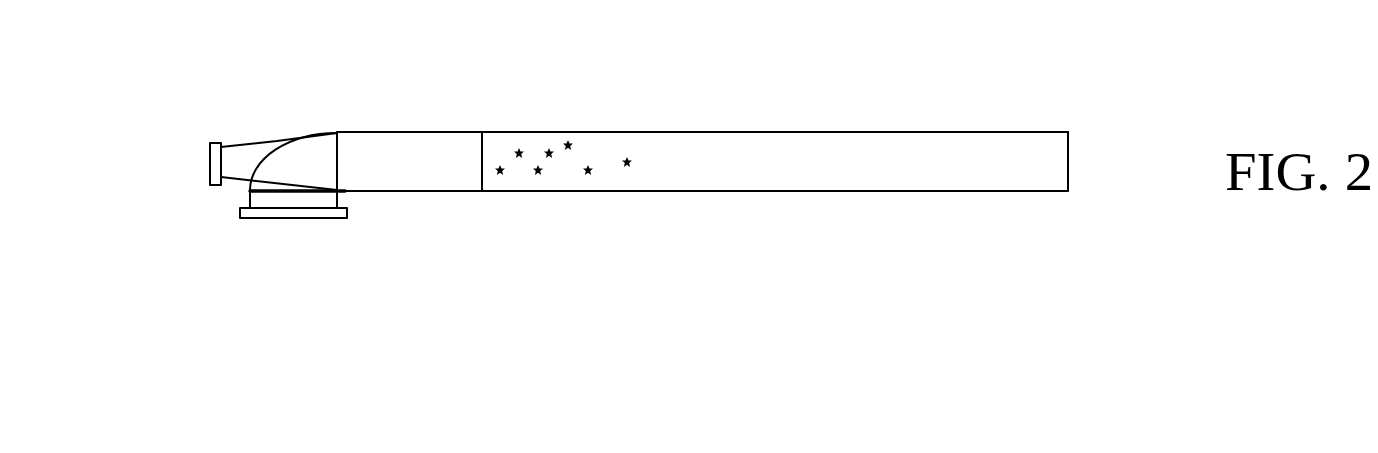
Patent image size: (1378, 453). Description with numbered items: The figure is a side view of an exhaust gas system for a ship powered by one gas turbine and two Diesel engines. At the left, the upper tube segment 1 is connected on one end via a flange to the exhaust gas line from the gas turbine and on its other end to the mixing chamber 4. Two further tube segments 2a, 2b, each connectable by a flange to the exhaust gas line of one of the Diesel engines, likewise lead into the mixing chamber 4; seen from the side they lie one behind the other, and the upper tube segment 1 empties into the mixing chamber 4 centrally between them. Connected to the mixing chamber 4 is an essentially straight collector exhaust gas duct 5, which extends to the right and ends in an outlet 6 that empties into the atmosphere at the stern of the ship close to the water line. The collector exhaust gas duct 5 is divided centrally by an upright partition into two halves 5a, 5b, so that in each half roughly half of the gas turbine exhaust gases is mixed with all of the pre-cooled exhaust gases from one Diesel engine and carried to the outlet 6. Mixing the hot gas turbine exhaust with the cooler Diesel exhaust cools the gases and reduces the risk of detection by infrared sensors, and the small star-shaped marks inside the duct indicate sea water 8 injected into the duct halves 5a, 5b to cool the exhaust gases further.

The tube segment 1 is at (290, 203).
The tube segment 2a is at (207, 111).
The tube segment 2b is at (238, 163).
The mixing chamber 4 is at (425, 162).
The collector exhaust gas duct 5 is at (702, 233).
The duct half 5a is at (471, 95).
The duct half 5b is at (493, 148).
The outlet 6 is at (1068, 148).
The sea water 8 is at (588, 170).